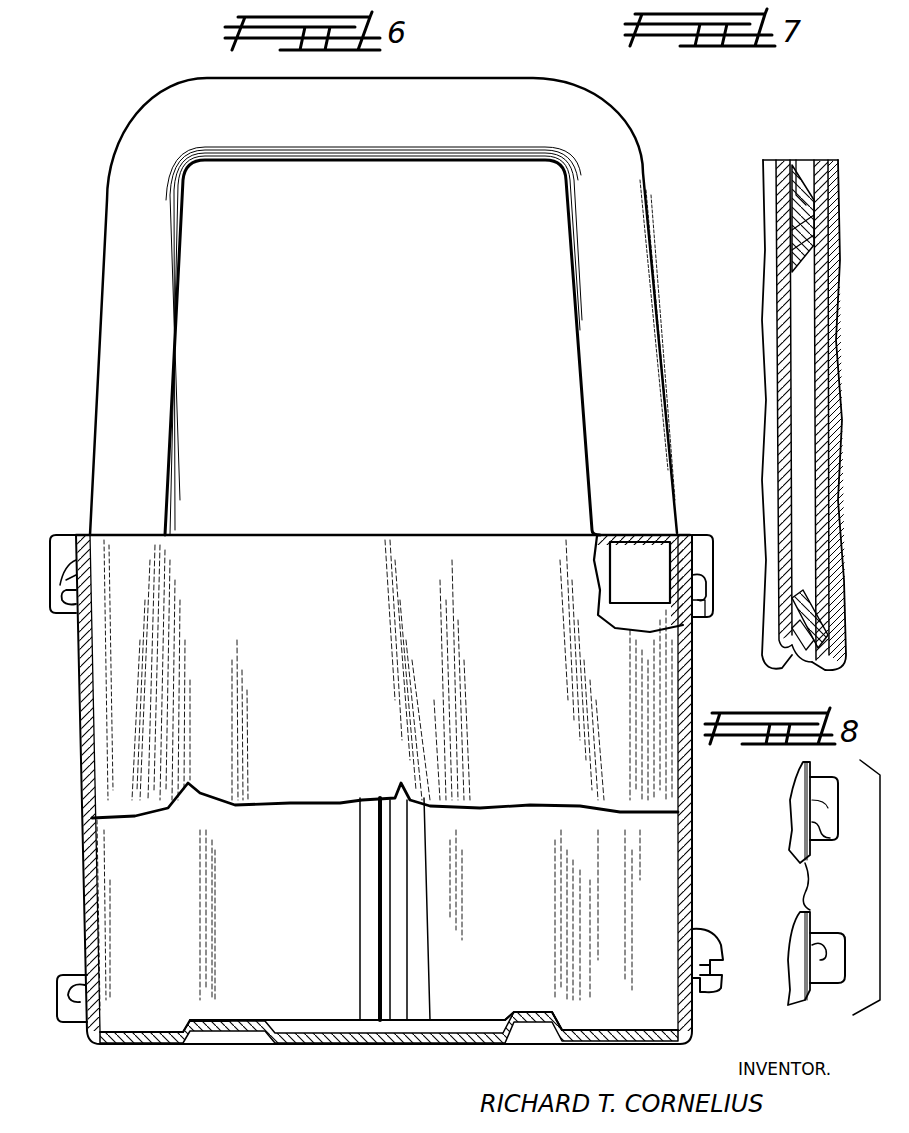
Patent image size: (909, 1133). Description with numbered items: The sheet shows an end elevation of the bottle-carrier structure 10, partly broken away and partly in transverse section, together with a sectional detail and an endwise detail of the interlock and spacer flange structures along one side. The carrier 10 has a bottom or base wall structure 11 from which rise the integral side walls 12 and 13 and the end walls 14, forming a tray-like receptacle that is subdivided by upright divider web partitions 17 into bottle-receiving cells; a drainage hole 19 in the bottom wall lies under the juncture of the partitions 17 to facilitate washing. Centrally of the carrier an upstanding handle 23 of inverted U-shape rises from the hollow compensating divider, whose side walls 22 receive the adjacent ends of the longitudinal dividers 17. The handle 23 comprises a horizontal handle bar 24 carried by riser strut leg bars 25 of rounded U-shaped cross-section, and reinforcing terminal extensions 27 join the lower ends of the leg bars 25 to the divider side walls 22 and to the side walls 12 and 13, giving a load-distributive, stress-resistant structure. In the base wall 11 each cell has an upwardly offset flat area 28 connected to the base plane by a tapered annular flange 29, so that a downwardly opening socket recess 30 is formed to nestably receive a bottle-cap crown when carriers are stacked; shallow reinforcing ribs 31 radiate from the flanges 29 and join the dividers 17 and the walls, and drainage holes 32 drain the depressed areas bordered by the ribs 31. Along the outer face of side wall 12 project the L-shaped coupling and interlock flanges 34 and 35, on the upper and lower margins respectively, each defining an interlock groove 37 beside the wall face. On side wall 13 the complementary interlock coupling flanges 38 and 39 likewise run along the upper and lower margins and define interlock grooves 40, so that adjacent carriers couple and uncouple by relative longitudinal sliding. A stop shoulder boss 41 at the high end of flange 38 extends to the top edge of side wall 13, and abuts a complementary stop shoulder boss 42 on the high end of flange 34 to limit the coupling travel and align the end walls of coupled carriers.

In FIG. 6, the bottle-carrier structure 10 is at (119, 1063).
In FIG. 7, the bottom or base wall structure 11 is at (830, 672).
In FIG. 6, the side wall 12 is at (94, 905).
In FIG. 7, the side wall 12 is at (826, 388).
In FIG. 8, the side wall 12 is at (807, 866).
In FIG. 6, the side wall 13 is at (678, 893).
In FIG. 7, the side wall 13 is at (782, 375).
In FIG. 6, the end wall 14 is at (438, 586).
In FIG. 8, the end wall 14 is at (800, 786).
In FIG. 6, the divider web partition 17 is at (380, 905).
In FIG. 7, the divider web partition 17 is at (832, 160).
In FIG. 6, the drainage hole 19 is at (420, 1043).
In FIG. 6, the side wall of compensating divider 22 is at (292, 872).
In FIG. 6, the handle 23 is at (653, 146).
In FIG. 6, the handle bar 24 is at (299, 152).
In FIG. 6, the riser strut leg bar 25 is at (170, 270).
In FIG. 6, the reinforcing terminal extension 27 is at (610, 584).
In FIG. 6, the offset flat area 28 is at (232, 1028).
In FIG. 6, the tapered annular flange 29 is at (186, 1020).
In FIG. 6, the socket recess 30 is at (208, 1044).
In FIG. 6, the reinforcing rib 31 is at (320, 1020).
In FIG. 6, the drainage hole 32 is at (138, 1043).
In FIG. 6, the coupling and interlock flange 34 is at (58, 580).
In FIG. 7, the coupling and interlock flange 34 is at (792, 200).
In FIG. 8, the coupling and interlock flange 34 is at (824, 778).
In FIG. 6, the coupling and interlock flange 35 is at (72, 1022).
In FIG. 7, the coupling and interlock flange 35 is at (793, 648).
In FIG. 8, the coupling and interlock flange 35 is at (826, 983).
In FIG. 6, the interlock groove 37 is at (74, 600).
In FIG. 8, the interlock groove 37 is at (822, 840).
In FIG. 6, the interlock coupling flange 38 is at (702, 615).
In FIG. 7, the interlock coupling flange 38 is at (800, 232).
In FIG. 6, the interlock coupling flange 39 is at (706, 942).
In FIG. 7, the interlock coupling flange 39 is at (816, 578).
In FIG. 6, the interlock groove 40 is at (706, 585).
In FIG. 6, the stop shoulder boss 41 is at (697, 535).
In FIG. 6, the stop shoulder boss 42 is at (56, 545).